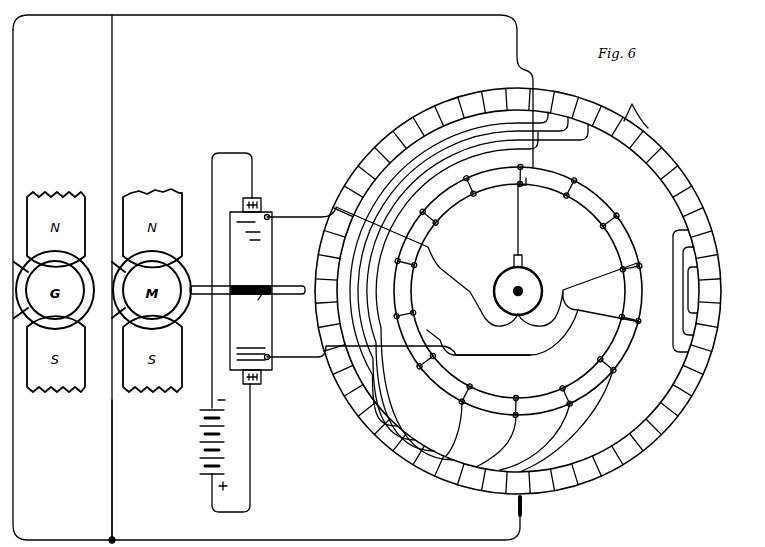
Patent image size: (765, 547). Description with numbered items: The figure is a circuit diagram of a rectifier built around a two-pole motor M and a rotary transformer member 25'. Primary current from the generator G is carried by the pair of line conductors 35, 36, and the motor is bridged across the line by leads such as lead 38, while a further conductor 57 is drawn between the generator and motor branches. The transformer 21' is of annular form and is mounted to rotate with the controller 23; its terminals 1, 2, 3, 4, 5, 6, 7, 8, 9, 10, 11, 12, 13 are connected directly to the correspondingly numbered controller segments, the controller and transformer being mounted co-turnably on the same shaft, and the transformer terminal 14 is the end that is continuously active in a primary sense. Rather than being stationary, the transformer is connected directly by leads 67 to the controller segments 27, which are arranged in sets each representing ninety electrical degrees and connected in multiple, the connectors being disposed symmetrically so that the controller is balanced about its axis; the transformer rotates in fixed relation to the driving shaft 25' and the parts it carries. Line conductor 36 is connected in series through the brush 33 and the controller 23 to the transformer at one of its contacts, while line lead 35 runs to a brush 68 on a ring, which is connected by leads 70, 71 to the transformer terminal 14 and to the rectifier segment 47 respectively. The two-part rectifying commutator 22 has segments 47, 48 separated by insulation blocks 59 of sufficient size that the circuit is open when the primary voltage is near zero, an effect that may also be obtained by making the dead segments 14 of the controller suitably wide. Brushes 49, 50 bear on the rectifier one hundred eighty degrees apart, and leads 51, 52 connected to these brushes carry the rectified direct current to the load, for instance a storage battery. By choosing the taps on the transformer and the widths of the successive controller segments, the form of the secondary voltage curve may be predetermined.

The line conductor 35 is at (16, 30).
The line conductor 36 is at (16, 536).
The conductor 57 is at (111, 99).
The lead 38 is at (111, 466).
The brush 33 is at (523, 515).
The rotary transformer member 25' is at (249, 278).
The rectifier 22 is at (262, 291).
The segment 47 is at (231, 246).
The segment 48 is at (268, 330).
The insulation block 59 is at (253, 306).
The brush 49 is at (261, 202).
The brush 50 is at (262, 380).
The lead 51 is at (212, 192).
The lead 52 is at (250, 496).
The controller 23 is at (683, 172).
The controller segments 27 is at (632, 108).
The leads 67 is at (572, 441).
The transformer contact 1 is at (642, 322).
The transformer tap 2 is at (616, 373).
The transformer tap 3 is at (571, 407).
The transformer tap 4 is at (515, 419).
The transformer tap 5 is at (460, 405).
The transformer tap 6 is at (416, 369).
The transformer tap 7 is at (393, 317).
The transformer tap 8 is at (394, 260).
The transformer tap 9 is at (419, 209).
The transformer tap 10 is at (465, 175).
The transformer tap 11 is at (520, 163).
The transformer tap 12 is at (576, 177).
The transformer tap 13 is at (620, 213).
The transformer terminal 14 is at (643, 265).
The transformer 21' is at (576, 213).
The brush 68 is at (513, 260).
The lead 70 is at (592, 284).
The lead 71 is at (466, 293).